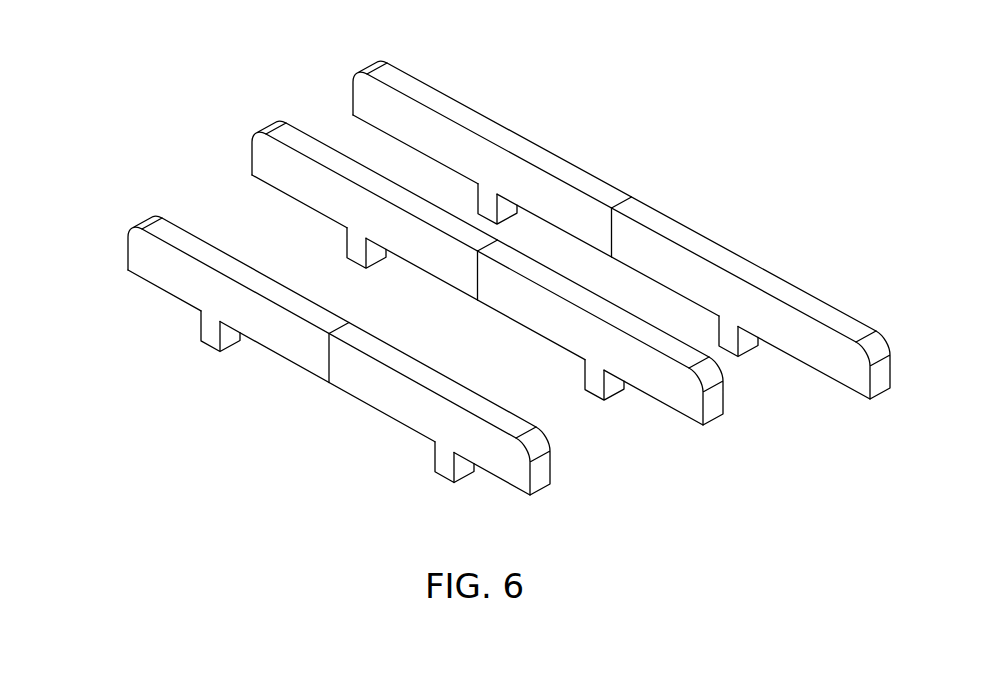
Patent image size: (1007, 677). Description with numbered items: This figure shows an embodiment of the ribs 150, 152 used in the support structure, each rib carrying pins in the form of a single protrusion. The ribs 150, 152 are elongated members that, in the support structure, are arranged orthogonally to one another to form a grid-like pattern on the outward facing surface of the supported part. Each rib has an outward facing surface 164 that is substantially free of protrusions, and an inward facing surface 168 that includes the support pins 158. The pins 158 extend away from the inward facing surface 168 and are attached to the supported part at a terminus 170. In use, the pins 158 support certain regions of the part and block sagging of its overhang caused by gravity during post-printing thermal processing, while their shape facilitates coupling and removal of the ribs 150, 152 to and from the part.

The ribs 150 is at (206, 63).
The ribs 152 is at (509, 275).
The support pins 158 is at (355, 427).
The outward facing surface 164 is at (621, 228).
The inward facing surface 168 is at (842, 385).
The terminus 170 is at (477, 477).